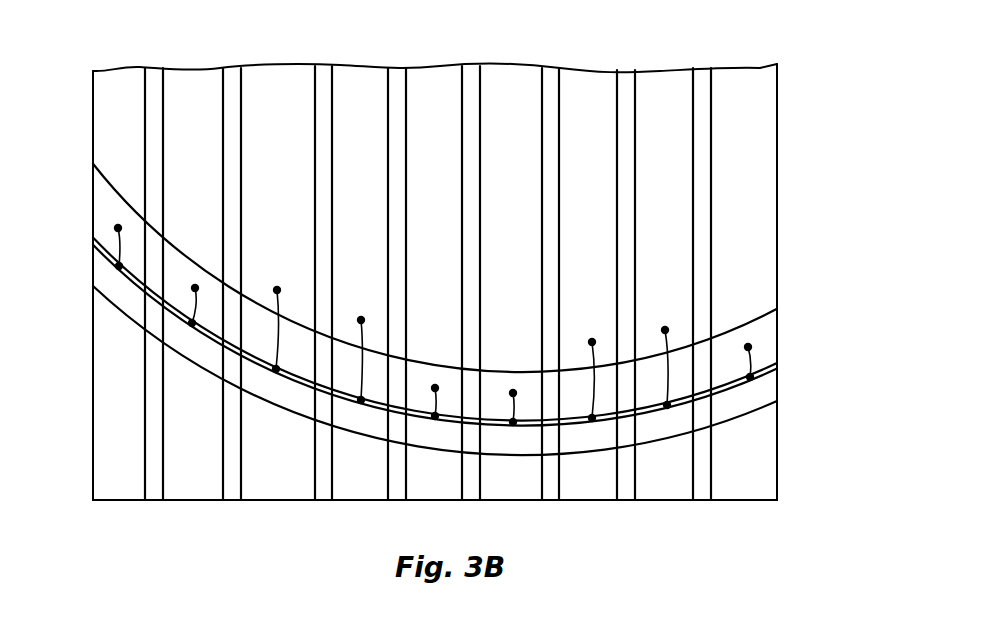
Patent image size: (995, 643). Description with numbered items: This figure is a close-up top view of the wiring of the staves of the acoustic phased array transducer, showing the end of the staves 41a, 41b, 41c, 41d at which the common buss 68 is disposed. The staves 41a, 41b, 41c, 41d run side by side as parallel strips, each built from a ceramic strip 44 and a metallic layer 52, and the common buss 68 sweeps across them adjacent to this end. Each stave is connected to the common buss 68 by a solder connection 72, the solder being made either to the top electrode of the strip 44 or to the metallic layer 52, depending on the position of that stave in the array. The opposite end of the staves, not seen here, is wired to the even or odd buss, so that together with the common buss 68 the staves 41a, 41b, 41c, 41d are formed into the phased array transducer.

The stave 41a is at (133, 82).
The stave 41b is at (200, 83).
The stave 41c is at (292, 82).
The stave 41d is at (370, 82).
The strip 44 is at (130, 129).
The metallic layer 52 is at (132, 302).
The common buss 68 is at (770, 363).
The solder connection 72 is at (118, 228).